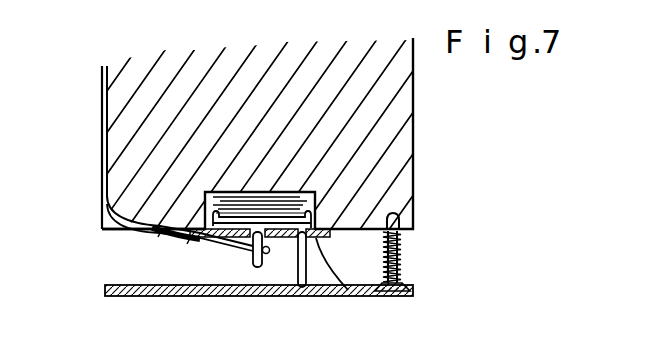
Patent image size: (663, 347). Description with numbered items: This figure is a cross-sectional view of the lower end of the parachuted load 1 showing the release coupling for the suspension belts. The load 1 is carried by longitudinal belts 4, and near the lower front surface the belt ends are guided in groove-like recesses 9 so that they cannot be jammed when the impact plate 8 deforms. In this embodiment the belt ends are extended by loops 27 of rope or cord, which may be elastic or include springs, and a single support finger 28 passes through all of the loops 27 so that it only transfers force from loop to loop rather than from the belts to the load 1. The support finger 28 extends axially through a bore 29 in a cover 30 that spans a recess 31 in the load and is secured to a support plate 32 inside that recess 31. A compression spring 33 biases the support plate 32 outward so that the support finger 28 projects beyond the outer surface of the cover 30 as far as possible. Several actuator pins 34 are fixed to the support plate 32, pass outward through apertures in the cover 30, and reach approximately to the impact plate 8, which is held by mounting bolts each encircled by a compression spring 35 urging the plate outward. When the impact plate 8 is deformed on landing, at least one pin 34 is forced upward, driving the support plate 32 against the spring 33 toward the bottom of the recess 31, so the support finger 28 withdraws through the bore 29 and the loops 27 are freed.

The load 1 is at (123, 131).
The longitudinal belts 4 is at (102, 105).
The impact plate 8 is at (116, 297).
The groove-like recesses 9 is at (113, 226).
The loops 27 is at (211, 245).
The support finger 28 is at (257, 268).
The bore 29 is at (268, 254).
The cover 30 is at (349, 283).
The recess 31 is at (318, 205).
The support plate 32 is at (311, 220).
The compression spring 33 is at (313, 192).
The actuator pins 34 is at (307, 272).
The compression spring 35 is at (403, 258).